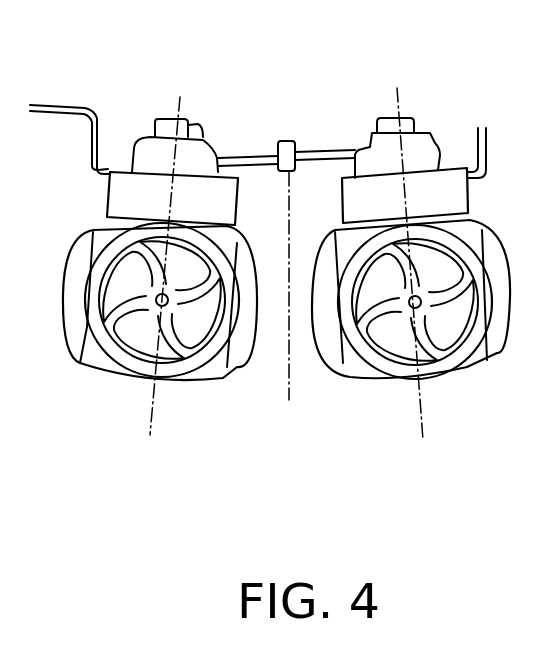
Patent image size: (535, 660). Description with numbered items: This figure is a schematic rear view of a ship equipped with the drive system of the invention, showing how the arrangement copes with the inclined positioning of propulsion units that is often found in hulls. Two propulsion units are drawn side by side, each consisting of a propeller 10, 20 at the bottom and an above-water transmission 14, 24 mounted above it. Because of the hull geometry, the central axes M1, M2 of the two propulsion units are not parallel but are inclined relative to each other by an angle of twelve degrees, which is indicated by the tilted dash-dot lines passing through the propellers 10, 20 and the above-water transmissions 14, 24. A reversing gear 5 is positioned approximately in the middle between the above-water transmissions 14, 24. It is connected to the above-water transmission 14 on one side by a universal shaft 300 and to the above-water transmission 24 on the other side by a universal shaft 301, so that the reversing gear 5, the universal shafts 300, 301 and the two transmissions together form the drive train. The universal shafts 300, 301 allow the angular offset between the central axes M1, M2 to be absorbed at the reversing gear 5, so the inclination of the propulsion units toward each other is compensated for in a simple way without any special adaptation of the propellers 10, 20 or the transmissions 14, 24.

The reversing gear 5 is at (288, 140).
The propeller 10 is at (125, 345).
The above-water transmission 14 is at (163, 118).
The propeller 20 is at (455, 345).
The above-water transmission 24 is at (404, 118).
The universal shaft 300 is at (236, 152).
The universal shaft 301 is at (330, 150).
The central axis M1 is at (152, 390).
The central axis M2 is at (414, 386).